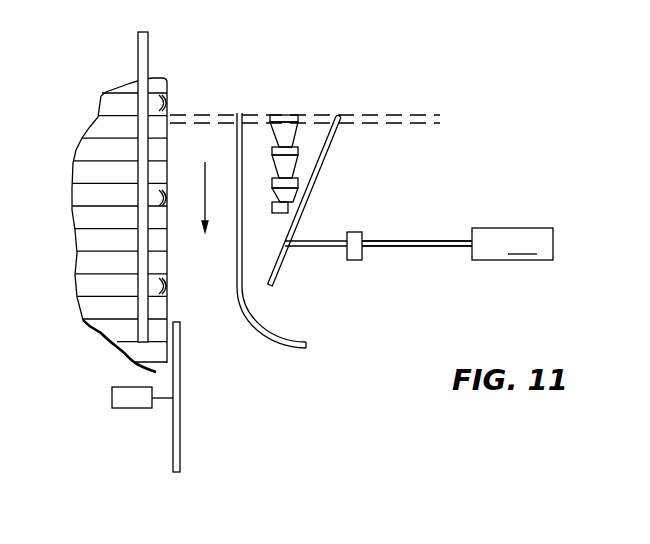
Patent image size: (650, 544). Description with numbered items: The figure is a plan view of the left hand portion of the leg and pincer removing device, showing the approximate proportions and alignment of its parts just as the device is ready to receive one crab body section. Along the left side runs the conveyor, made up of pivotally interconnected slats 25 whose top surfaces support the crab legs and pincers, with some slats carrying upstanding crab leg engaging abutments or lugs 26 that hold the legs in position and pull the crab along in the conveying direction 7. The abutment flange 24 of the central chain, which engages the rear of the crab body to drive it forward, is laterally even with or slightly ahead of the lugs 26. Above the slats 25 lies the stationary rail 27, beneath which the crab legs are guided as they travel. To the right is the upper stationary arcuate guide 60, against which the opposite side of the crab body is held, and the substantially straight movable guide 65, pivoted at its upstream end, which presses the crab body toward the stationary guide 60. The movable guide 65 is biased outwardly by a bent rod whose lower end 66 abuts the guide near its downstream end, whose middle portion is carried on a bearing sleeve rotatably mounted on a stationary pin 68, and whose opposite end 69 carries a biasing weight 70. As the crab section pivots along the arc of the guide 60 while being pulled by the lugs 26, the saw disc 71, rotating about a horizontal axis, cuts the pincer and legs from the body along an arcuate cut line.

The conveying direction 7 is at (214, 197).
The abutment flange 24 is at (288, 208).
The slats 25 is at (87, 147).
The crab leg engaging abutments 26 is at (168, 103).
The stationary rail 27 is at (148, 48).
The upper stationary arcuate guide 60 is at (241, 118).
The movable guide 65 is at (338, 150).
The lower end of bent rod 66 is at (318, 248).
The stationary pin 68 is at (356, 232).
The opposite end of bent rod 69 is at (420, 242).
The biasing weight 70 is at (112, 393).
The saw disc 71 is at (180, 440).